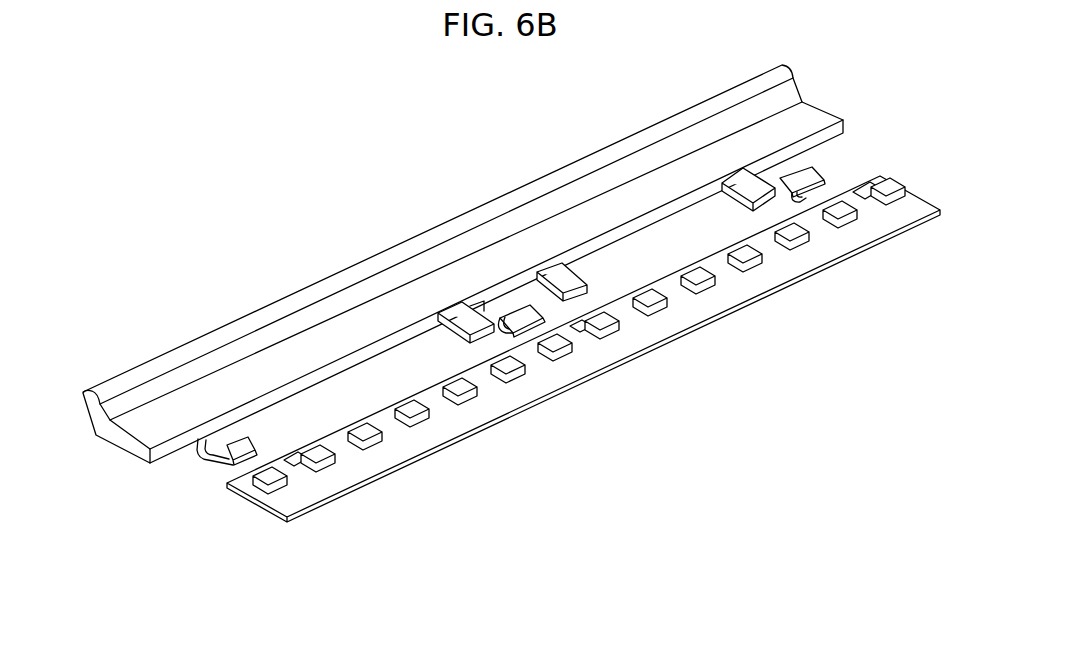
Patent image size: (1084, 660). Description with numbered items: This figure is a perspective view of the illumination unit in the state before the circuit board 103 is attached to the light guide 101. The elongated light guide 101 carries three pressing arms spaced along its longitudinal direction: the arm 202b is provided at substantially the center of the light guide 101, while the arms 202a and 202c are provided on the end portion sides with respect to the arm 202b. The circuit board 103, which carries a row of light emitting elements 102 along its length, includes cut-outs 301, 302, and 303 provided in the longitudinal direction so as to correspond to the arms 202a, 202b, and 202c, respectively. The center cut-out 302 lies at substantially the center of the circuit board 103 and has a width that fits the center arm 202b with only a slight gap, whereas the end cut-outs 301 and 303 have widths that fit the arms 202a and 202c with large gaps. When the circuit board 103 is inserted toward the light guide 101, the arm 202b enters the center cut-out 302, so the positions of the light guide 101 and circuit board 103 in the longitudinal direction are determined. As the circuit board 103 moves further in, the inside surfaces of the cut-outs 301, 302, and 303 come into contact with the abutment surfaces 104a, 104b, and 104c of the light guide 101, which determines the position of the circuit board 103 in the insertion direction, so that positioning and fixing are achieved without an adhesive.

The light guide 101 is at (612, 172).
The light emitting element 102 is at (282, 490).
The circuit board 103 is at (690, 320).
The abutment surface 104a is at (210, 462).
The abutment surface 104b is at (497, 300).
The abutment surface 104c is at (773, 175).
The arm 202a is at (242, 453).
The arm 202b is at (527, 322).
The arm 202c is at (807, 187).
The cut-out 301 is at (297, 463).
The cut-out 302 is at (588, 332).
The cut-out 303 is at (850, 193).